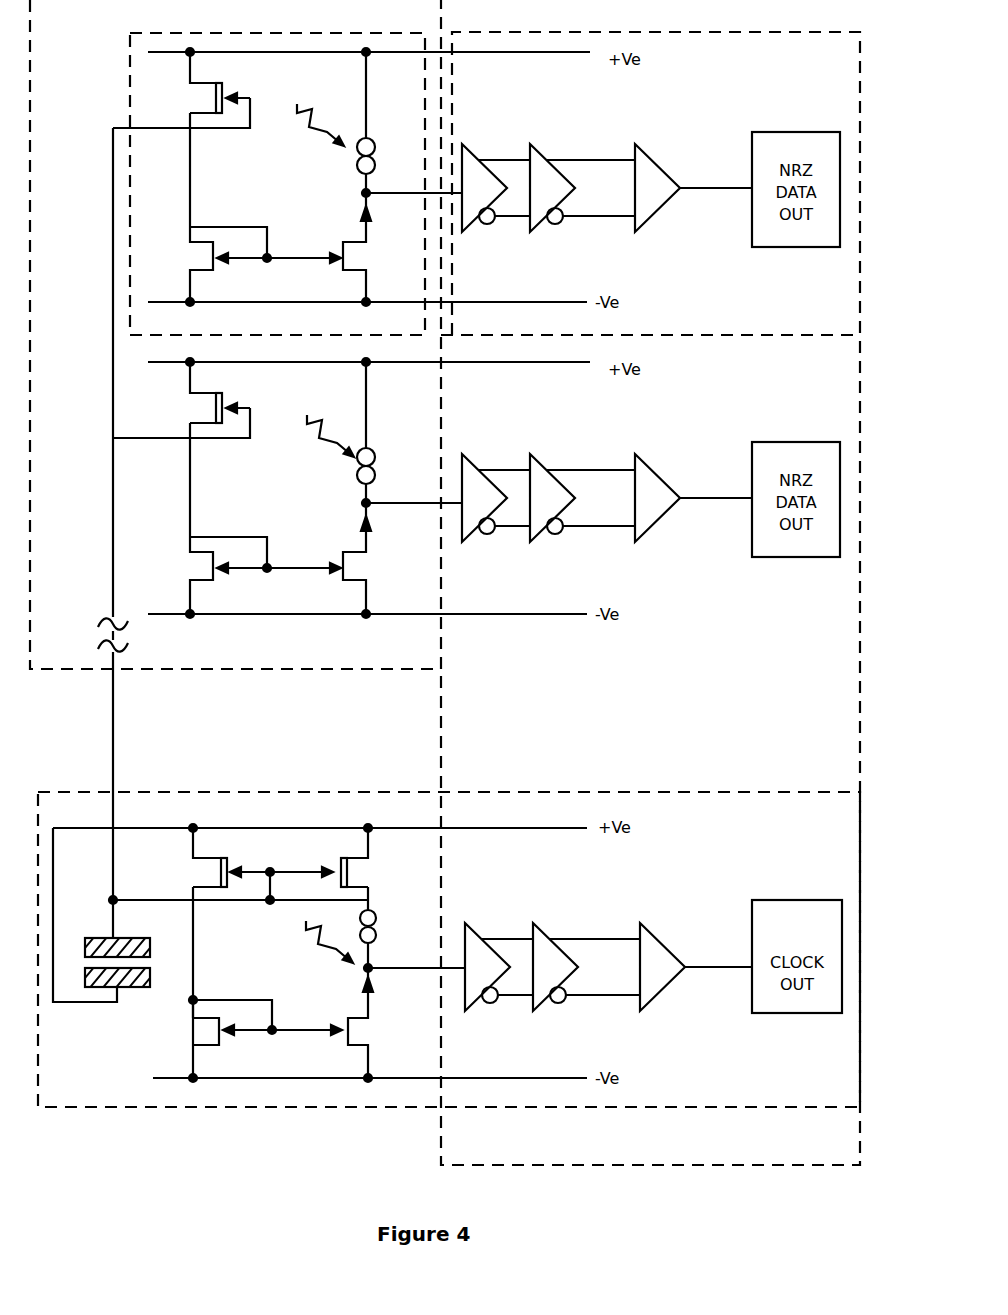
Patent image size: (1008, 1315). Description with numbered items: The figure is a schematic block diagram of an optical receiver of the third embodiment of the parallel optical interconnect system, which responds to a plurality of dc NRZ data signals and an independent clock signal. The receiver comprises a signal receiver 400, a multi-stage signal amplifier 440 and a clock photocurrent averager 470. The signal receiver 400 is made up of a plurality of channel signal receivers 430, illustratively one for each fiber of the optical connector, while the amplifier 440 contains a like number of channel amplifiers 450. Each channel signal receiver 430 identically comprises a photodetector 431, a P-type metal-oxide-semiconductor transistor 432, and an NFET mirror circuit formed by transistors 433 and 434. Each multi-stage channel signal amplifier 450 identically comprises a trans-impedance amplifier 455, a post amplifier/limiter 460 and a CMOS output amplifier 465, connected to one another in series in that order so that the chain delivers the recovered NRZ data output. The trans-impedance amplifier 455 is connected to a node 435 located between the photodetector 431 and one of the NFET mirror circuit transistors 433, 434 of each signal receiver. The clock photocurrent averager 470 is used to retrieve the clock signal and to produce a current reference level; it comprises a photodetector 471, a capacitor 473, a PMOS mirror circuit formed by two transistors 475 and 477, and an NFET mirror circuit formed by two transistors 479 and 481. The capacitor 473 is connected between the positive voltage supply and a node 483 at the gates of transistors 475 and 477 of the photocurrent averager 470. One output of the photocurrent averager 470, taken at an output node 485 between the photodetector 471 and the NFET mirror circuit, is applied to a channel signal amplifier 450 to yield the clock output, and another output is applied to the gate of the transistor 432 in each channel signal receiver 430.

The signal receiver 400 is at (103, 36).
The channel signal receiver 430 is at (129, 48).
The photodetector 431 is at (356, 165).
The P-type Metal-Oxide-Semiconductor transistor (PMOS) 432 is at (207, 97).
The NFET mirror circuit transistor 433 is at (206, 249).
The NFET mirror circuit transistor 434 is at (360, 259).
The photocurrent output node 435 is at (362, 195).
The multi-stage signal amplifier 440 is at (740, 24).
The channel signal amplifier 450 is at (718, 335).
The trans-impedance amplifier 455 is at (476, 150).
The post amplifier/limiter 460 is at (548, 150).
The CMOS output amplifier 465 is at (652, 150).
The clock photocurrent averager 470 is at (83, 1094).
The photodetector 471 is at (378, 915).
The capacitor 473 is at (135, 989).
The PMOS mirror circuit transistor 475 is at (210, 868).
The PMOS mirror circuit transistor 477 is at (353, 882).
The NFET mirror circuit transistor 479 is at (210, 1028).
The NFET mirror circuit transistor 481 is at (370, 1036).
The bias node 483 is at (111, 897).
The clock output node 485 is at (375, 963).